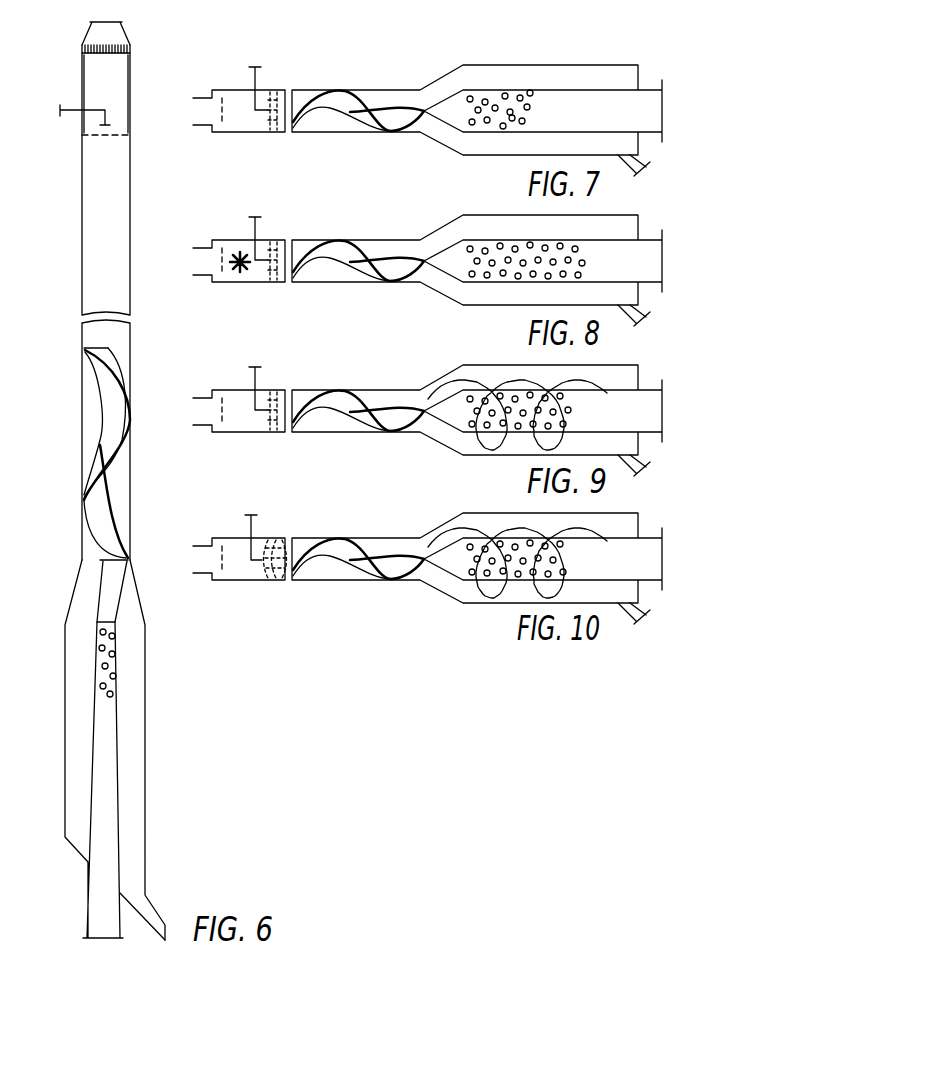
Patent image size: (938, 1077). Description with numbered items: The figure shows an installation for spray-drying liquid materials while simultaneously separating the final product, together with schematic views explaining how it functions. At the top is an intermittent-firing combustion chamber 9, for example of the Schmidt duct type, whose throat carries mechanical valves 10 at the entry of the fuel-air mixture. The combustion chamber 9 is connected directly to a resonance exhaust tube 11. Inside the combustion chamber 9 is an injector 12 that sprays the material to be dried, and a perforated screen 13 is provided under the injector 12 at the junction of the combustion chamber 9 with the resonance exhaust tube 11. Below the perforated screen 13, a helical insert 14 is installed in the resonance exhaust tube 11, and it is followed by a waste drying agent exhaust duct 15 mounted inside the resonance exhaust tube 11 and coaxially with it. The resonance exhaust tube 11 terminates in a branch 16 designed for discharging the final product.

In FIG. 6, the intermittent-firing combustion chamber 9 is at (92, 70).
In FIG. 7, the intermittent-firing combustion chamber 9 is at (230, 108).
In FIG. 8, the intermittent-firing combustion chamber 9 is at (239, 231).
In FIG. 9, the intermittent-firing combustion chamber 9 is at (239, 384).
In FIG. 10, the intermittent-firing combustion chamber 9 is at (239, 585).
In FIG. 6, the mechanical valves 10 is at (90, 42).
In FIG. 7, the mechanical valves 10 is at (222, 104).
In FIG. 8, the mechanical valves 10 is at (234, 228).
In FIG. 9, the mechanical valves 10 is at (207, 380).
In FIG. 10, the mechanical valves 10 is at (208, 589).
In FIG. 6, the resonance exhaust tube 11 is at (81, 202).
In FIG. 7, the resonance exhaust tube 11 is at (325, 133).
In FIG. 8, the resonance exhaust tube 11 is at (477, 243).
In FIG. 9, the resonance exhaust tube 11 is at (477, 395).
In FIG. 10, the resonance exhaust tube 11 is at (477, 550).
In FIG. 6, the injector 12 is at (88, 108).
In FIG. 7, the injector 12 is at (258, 112).
In FIG. 8, the injector 12 is at (286, 220).
In FIG. 9, the injector 12 is at (268, 373).
In FIG. 10, the injector 12 is at (259, 574).
In FIG. 6, the perforated screen 13 is at (88, 136).
In FIG. 7, the perforated screen 13 is at (273, 114).
In FIG. 8, the perforated screen 13 is at (311, 230).
In FIG. 9, the perforated screen 13 is at (294, 383).
In FIG. 10, the perforated screen 13 is at (286, 586).
In FIG. 6, the helical insert 14 is at (106, 373).
In FIG. 7, the helical insert 14 is at (366, 118).
In FIG. 8, the helical insert 14 is at (358, 231).
In FIG. 9, the helical insert 14 is at (359, 383).
In FIG. 10, the helical insert 14 is at (358, 538).
In FIG. 6, the waste drying agent exhaust duct 15 is at (97, 668).
In FIG. 7, the waste drying agent exhaust duct 15 is at (545, 103).
In FIG. 8, the waste drying agent exhaust duct 15 is at (524, 229).
In FIG. 9, the waste drying agent exhaust duct 15 is at (548, 433).
In FIG. 10, the waste drying agent exhaust duct 15 is at (512, 580).
In FIG. 6, the branch 16 is at (153, 915).
In FIG. 7, the branch 16 is at (640, 172).
In FIG. 8, the branch 16 is at (631, 329).
In FIG. 9, the branch 16 is at (634, 483).
In FIG. 10, the branch 16 is at (630, 628).